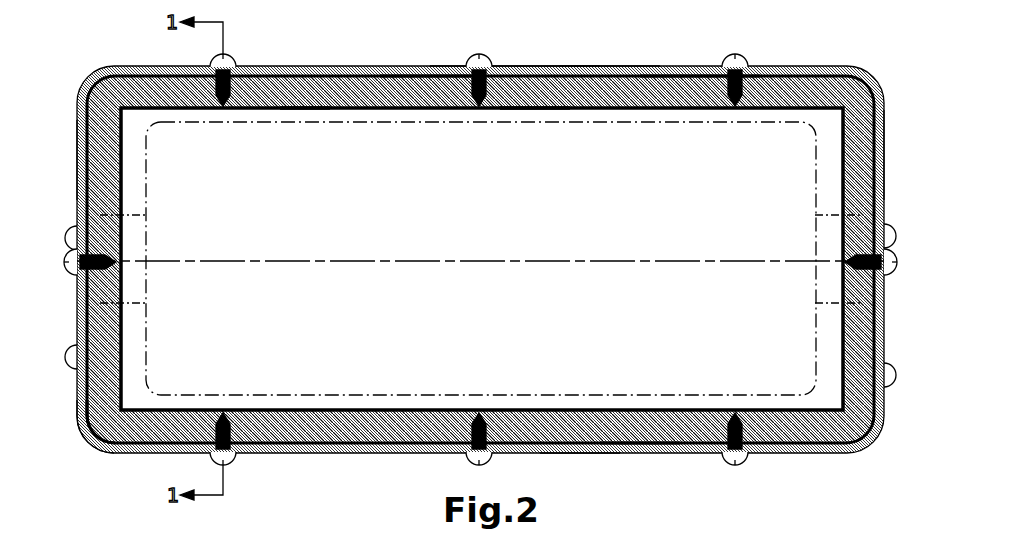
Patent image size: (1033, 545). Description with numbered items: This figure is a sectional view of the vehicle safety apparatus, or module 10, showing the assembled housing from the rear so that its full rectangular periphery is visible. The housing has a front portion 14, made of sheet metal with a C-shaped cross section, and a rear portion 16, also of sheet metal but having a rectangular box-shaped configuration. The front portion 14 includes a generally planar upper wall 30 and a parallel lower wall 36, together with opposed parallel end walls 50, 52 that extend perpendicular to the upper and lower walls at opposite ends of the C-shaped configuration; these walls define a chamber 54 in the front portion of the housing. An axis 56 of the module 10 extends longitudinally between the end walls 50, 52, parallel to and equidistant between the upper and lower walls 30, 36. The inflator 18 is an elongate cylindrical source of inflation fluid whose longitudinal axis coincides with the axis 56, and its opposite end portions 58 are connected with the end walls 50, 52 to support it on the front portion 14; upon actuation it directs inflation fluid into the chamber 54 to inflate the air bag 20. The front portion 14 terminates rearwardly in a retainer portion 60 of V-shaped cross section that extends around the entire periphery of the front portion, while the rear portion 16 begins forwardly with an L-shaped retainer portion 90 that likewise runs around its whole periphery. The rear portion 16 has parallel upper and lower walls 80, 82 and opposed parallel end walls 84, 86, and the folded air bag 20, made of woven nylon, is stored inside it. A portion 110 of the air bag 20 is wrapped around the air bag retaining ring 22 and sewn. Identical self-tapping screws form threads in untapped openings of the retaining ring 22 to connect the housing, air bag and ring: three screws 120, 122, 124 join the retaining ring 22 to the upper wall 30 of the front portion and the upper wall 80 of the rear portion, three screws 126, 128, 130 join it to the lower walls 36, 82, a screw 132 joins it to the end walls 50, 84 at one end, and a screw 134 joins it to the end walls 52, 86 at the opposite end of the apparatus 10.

The module 10 is at (810, 50).
The first portion 14 is at (430, 66).
The second portion 16 is at (396, 70).
The inflator 18 is at (655, 122).
The air bag 20 is at (318, 70).
The air bag retaining ring 22 is at (535, 100).
The upper wall 30 is at (640, 70).
The lower wall 36 is at (572, 453).
The end wall 50 is at (76, 140).
The end wall 52 is at (886, 135).
The chamber 54 is at (600, 122).
The axis 56 is at (543, 262).
The end portions 58 is at (128, 304).
The retainer portion 60 is at (84, 442).
The upper wall 80 is at (670, 68).
The lower wall 82 is at (617, 447).
The end wall 84 is at (100, 333).
The end wall 86 is at (870, 415).
The retainer portion 90 is at (102, 460).
The portion of the air bag 110 is at (302, 108).
The screw 120 is at (217, 62).
The screw 122 is at (486, 60).
The screw 124 is at (740, 63).
The screw 126 is at (236, 460).
The screw 128 is at (470, 459).
The screw 130 is at (740, 458).
The screw 132 is at (96, 217).
The screw 134 is at (864, 194).